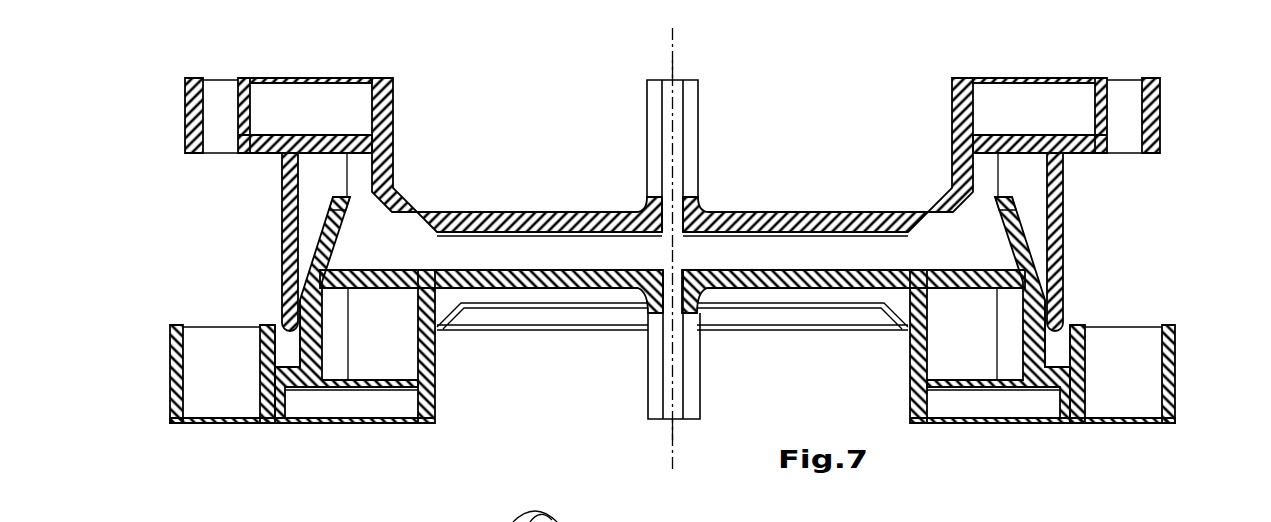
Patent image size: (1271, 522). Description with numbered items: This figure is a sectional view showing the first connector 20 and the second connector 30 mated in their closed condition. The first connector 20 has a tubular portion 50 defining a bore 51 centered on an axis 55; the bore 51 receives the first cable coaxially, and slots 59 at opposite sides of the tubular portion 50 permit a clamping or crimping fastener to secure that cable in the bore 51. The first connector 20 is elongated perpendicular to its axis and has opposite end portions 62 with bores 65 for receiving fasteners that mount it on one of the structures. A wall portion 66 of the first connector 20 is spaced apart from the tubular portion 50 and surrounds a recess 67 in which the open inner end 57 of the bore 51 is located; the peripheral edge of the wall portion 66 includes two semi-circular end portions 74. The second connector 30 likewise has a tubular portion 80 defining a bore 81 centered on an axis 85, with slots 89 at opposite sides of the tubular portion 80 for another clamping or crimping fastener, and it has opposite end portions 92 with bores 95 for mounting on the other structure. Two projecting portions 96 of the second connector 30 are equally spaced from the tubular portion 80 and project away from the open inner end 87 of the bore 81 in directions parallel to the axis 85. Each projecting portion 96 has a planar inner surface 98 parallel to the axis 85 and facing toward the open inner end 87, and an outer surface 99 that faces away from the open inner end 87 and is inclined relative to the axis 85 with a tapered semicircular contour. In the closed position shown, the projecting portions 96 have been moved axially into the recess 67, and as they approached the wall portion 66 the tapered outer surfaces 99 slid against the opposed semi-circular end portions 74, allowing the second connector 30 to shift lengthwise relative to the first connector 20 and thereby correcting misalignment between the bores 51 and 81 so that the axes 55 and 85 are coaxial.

The first connector 20 is at (449, 74).
The second connector 30 is at (500, 432).
The tubular portion 50 is at (647, 93).
The bore 51 is at (677, 73).
The axis 55 is at (671, 70).
The open inner end 57 is at (665, 235).
The slots 59 is at (655, 145).
The end portions 62 is at (185, 108).
The bores 65 is at (222, 82).
The wall portion 66 is at (283, 258).
The recess 67 is at (524, 266).
The semi-circular end portions 74 is at (286, 346).
The tubular portion 80 is at (648, 395).
The bore 81 is at (680, 422).
The axis 85 is at (670, 440).
The open inner end 87 is at (680, 270).
The slots 89 is at (655, 372).
The end portions 92 is at (170, 366).
The bores 95 is at (223, 416).
The projecting portions 96 is at (340, 197).
The planar inner surface 98 is at (350, 243).
The outer surface 99 is at (322, 224).